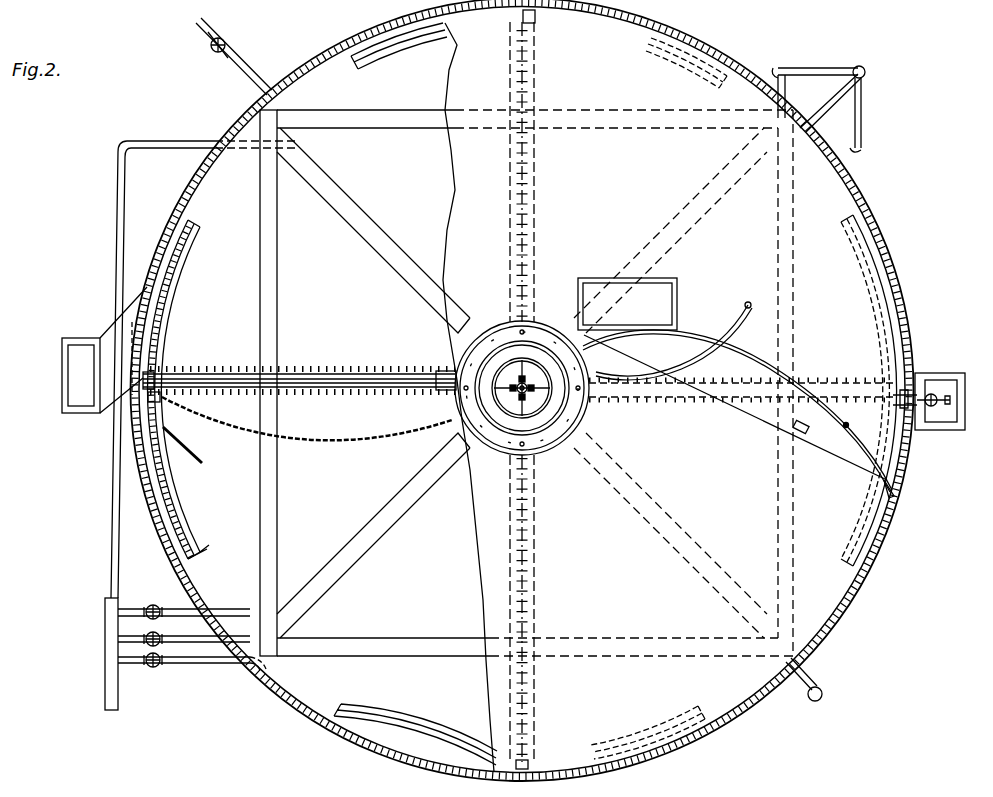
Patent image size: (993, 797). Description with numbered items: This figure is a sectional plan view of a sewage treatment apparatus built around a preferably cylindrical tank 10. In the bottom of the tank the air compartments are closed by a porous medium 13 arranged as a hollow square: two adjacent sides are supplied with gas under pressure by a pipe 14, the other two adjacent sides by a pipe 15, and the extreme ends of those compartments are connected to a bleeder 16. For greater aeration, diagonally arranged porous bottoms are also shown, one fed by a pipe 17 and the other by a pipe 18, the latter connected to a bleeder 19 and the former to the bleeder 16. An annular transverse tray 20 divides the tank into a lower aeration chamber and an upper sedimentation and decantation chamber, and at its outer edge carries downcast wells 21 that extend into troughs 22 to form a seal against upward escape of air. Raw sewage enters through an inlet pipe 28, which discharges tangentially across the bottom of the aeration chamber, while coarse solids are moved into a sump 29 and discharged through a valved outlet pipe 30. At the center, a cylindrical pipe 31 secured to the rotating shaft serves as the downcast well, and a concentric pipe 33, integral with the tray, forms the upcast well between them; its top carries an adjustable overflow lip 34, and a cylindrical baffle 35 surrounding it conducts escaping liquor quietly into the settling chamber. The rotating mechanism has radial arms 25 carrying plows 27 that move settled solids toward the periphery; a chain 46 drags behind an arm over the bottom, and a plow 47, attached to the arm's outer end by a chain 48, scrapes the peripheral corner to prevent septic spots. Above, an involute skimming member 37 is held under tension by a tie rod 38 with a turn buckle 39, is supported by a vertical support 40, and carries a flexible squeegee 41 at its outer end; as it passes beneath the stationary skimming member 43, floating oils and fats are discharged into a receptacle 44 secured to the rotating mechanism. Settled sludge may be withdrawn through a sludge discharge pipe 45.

The tank or receptacle 10 is at (190, 180).
The porous medium 13 is at (290, 540).
The pipe 14 is at (196, 647).
The pipe 15 is at (212, 644).
The bleeder 16 is at (862, 68).
The pipe 17 is at (178, 619).
The pipe 18 is at (195, 143).
The bleeder 19 is at (822, 692).
The transverse tray or shelf 20 is at (490, 572).
The downcast wells 21 is at (210, 498).
The troughs 22 is at (216, 524).
The radially disposed arms 25 is at (372, 376).
The plows or scrapers 27 is at (348, 374).
The inlet pipe 28 is at (78, 414).
The sump 29 is at (922, 380).
The valved outlet pipe 30 is at (931, 410).
The cylindrical pipe or tube 31 is at (552, 400).
The cylindrical pipe or well 33 is at (500, 447).
The adjustable overflow lip 34 is at (545, 440).
The cylindrical baffle 35 is at (495, 326).
The involute skimming member 37 is at (812, 380).
The tie rod 38 is at (840, 442).
The turn buckle 39 is at (795, 432).
The vertical support 40 is at (862, 412).
The flexible squeegee 41 is at (880, 494).
The stationary skimming member 43 is at (752, 316).
The receptacle 44 is at (680, 296).
The sludge discharge pipe 45 is at (243, 72).
The chain 46 is at (305, 438).
The plow 47 is at (197, 446).
The chain 48 is at (162, 403).